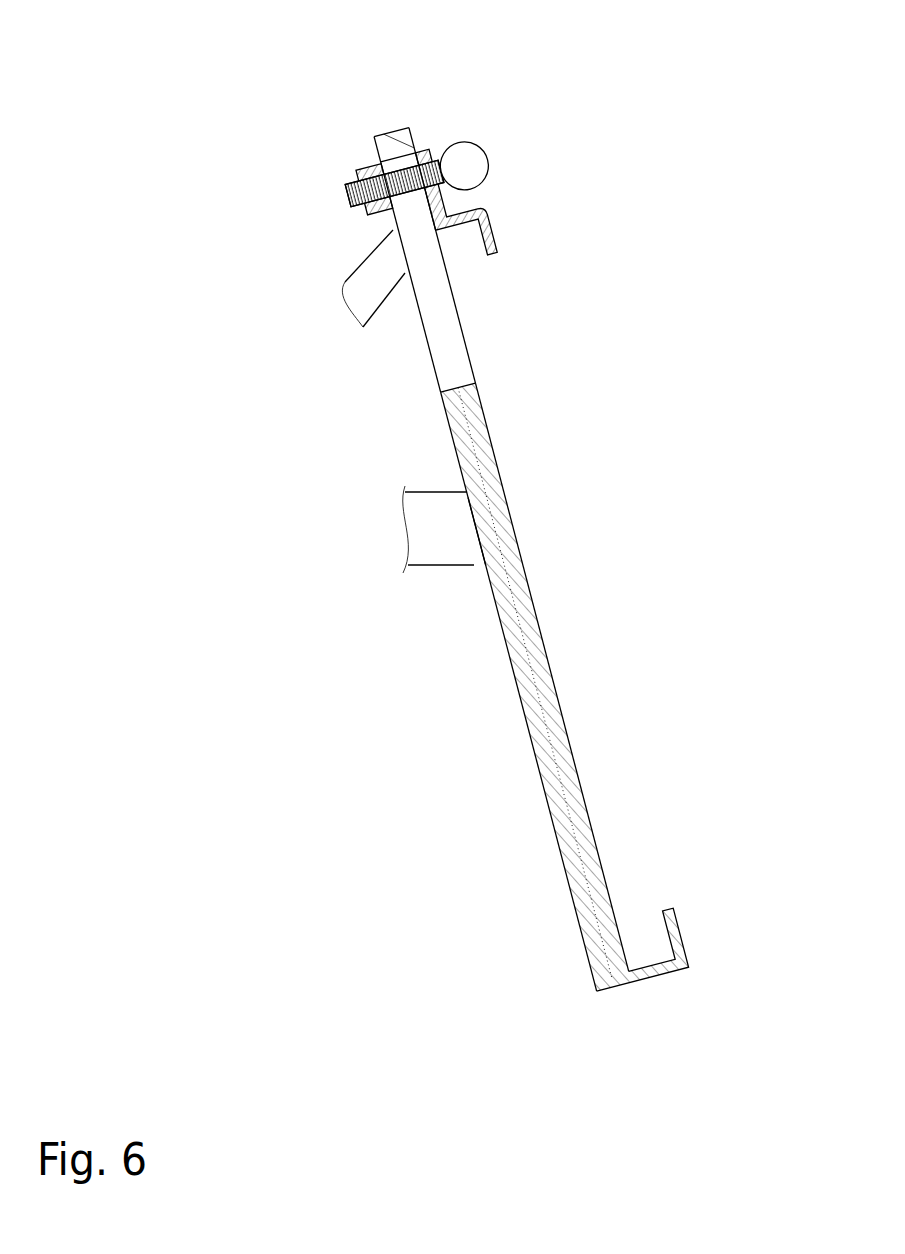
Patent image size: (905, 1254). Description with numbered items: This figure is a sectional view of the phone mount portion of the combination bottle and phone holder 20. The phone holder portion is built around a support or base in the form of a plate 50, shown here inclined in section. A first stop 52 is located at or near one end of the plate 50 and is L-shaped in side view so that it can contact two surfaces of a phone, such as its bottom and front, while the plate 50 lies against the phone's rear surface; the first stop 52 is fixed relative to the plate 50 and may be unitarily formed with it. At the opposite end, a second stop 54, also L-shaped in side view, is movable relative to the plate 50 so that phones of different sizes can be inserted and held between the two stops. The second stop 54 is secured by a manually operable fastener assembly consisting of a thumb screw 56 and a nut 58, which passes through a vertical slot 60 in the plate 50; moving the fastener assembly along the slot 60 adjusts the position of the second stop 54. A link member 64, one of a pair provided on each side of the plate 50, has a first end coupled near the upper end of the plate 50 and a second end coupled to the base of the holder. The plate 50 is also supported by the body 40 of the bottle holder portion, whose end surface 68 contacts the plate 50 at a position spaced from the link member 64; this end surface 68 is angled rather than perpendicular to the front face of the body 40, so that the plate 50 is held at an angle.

The combination bottle and phone holder 20 is at (641, 111).
The body 40 is at (421, 509).
The plate 50 is at (519, 646).
The first stop 52 is at (683, 942).
The second stop 54 is at (499, 230).
The thumb screw 56 is at (473, 156).
The nut 58 is at (357, 164).
The vertical slot 60 is at (444, 353).
The link member 64 is at (357, 286).
The end surface 68 is at (474, 540).